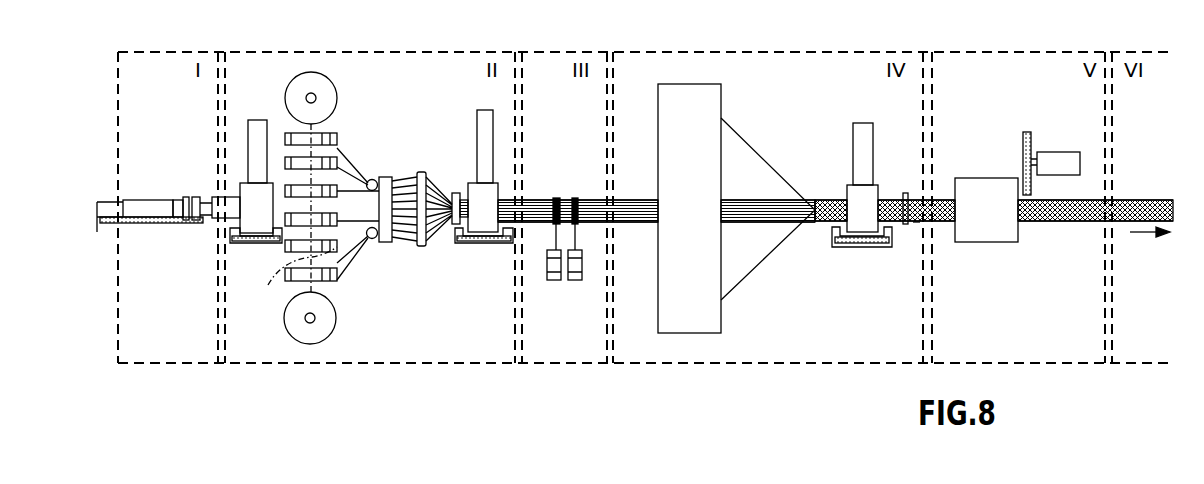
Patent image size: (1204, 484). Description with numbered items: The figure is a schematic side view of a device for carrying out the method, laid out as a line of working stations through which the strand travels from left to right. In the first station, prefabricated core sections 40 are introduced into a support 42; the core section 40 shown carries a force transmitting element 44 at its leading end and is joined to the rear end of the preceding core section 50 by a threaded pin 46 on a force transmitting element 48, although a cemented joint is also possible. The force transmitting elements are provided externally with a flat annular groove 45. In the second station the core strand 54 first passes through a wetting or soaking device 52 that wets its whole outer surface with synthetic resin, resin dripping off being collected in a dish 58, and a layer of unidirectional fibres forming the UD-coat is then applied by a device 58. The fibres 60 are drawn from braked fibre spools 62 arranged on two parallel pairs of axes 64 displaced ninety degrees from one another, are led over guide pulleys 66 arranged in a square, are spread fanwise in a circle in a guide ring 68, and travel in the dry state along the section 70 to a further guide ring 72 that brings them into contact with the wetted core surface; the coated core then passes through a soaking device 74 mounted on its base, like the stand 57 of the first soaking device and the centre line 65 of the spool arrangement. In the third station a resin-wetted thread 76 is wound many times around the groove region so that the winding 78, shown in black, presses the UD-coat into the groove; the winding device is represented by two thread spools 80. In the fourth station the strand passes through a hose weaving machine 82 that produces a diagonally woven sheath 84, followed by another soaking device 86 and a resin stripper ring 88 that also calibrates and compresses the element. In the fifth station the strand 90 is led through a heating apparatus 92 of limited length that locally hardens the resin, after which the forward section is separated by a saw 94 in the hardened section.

The core section 40 is at (146, 200).
The support 42 is at (104, 200).
The force transmitting element 44 is at (178, 200).
The flat annular groove 45 is at (172, 222).
The threaded pin 46 is at (195, 223).
The force transmitting element 48 is at (205, 203).
The preceding core section 50 is at (230, 197).
The wetting or soaking device 52 is at (256, 118).
The core strand 54 is at (363, 180).
The base bracket 57 is at (252, 244).
The device for applying UD-coat 58 is at (372, 134).
The fibres 60 is at (370, 240).
The fibre spools 62 is at (330, 148).
The pairs of axes 64 is at (316, 98).
The center line 65 is at (299, 279).
The guide pulleys 66 is at (381, 177).
The guide ring 68 is at (420, 172).
The section 70 is at (428, 172).
The guide ring 72 is at (455, 192).
The soaking device 74 is at (484, 124).
The thread 76 is at (574, 228).
The winding 78 is at (575, 197).
The thread spools 80 is at (554, 283).
The hose weaving machine 82 is at (699, 117).
The diagonally woven sheath 84 is at (831, 197).
The soaking device 86 is at (863, 120).
The resin stripper ring 88 is at (905, 193).
The strand 90 is at (919, 224).
The heating apparatus 92 is at (977, 180).
The saw 94 is at (1055, 153).